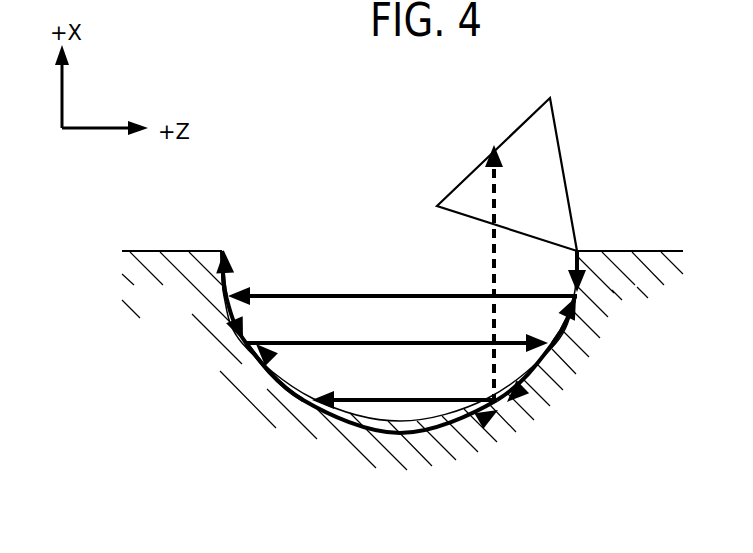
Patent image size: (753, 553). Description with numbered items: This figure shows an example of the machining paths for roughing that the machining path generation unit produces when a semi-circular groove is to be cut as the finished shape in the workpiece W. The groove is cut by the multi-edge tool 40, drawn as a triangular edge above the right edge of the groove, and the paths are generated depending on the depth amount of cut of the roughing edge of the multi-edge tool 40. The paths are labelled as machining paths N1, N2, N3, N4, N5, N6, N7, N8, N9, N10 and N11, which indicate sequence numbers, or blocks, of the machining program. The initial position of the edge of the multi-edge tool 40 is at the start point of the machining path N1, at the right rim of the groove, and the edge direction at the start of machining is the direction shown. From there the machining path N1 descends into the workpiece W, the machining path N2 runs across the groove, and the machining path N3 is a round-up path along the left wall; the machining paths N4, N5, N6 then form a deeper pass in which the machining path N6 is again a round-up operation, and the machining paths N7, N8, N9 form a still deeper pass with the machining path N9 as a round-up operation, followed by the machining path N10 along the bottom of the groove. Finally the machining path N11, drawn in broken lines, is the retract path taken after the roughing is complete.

The multi-edge tool 40 is at (505, 141).
The workpiece W is at (400, 467).
The machining path N1 is at (598, 271).
The machining path N2 is at (402, 287).
The machining path N3 is at (243, 273).
The machining path N4 is at (211, 297).
The machining path N5 is at (397, 334).
The machining path N6 is at (552, 319).
The machining path N7 is at (550, 349).
The machining path N8 is at (404, 390).
The machining path N9 is at (280, 371).
The machining path N10 is at (372, 401).
The machining path N11 is at (473, 274).